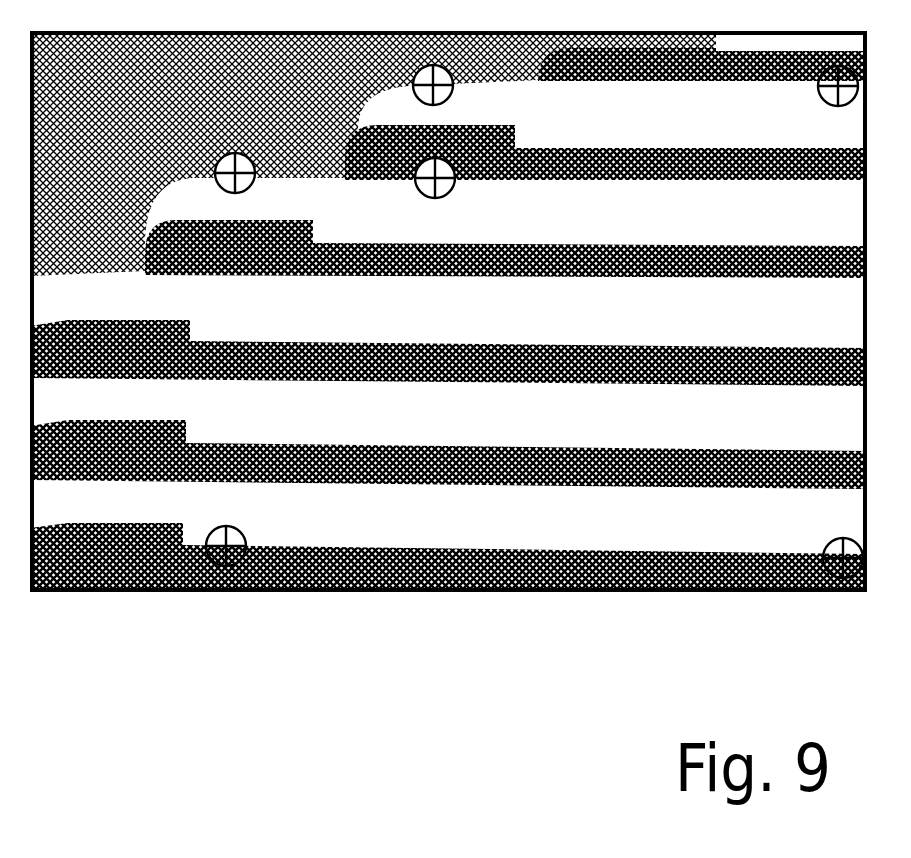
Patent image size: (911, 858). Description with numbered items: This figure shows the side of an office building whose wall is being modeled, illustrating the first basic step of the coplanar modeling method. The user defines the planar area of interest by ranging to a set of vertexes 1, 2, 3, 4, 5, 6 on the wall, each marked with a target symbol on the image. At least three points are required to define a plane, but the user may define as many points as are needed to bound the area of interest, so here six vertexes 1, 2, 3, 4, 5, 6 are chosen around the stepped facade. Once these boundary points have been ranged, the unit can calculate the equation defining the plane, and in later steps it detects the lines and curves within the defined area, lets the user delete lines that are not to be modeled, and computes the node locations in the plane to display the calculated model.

The vertex 1 is at (418, 75).
The vertex 2 is at (824, 102).
The vertex 3 is at (826, 540).
The vertex 4 is at (242, 524).
The vertex 5 is at (229, 148).
The vertex 6 is at (449, 196).